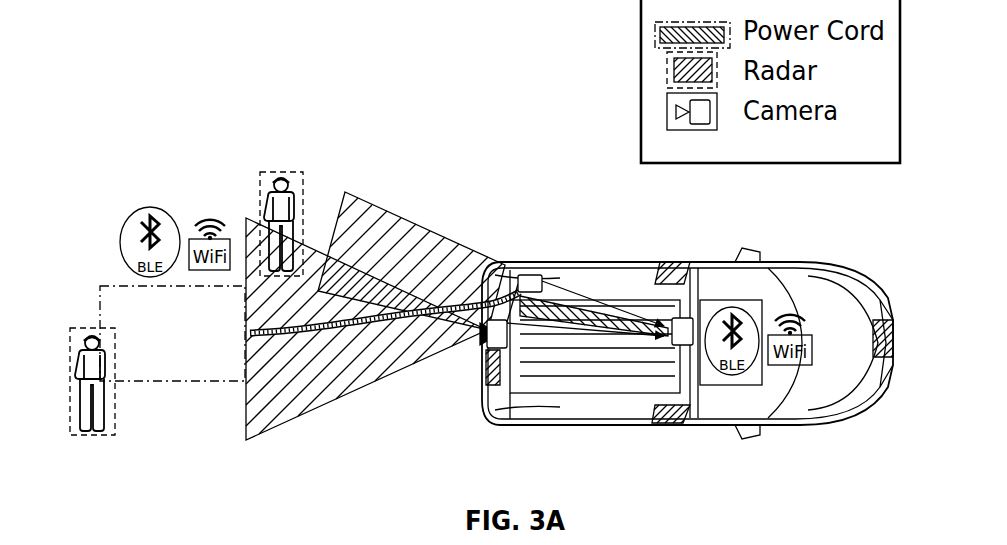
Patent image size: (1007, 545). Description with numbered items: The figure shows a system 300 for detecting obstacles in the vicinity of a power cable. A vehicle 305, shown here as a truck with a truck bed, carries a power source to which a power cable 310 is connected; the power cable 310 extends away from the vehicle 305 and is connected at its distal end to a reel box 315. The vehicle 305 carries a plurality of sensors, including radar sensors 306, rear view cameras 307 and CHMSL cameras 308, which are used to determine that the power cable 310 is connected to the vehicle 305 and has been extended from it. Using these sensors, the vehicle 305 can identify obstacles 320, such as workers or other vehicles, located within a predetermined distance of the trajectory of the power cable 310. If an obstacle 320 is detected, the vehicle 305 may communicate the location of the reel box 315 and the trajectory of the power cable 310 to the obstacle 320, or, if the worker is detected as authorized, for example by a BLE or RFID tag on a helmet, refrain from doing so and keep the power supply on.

The system 300 is at (200, 137).
The vehicle 305 is at (578, 262).
The radar sensors 306 is at (485, 383).
The rear view cameras 307 is at (497, 318).
The CHMSL cameras 308 is at (683, 317).
The power cable 310 is at (453, 303).
The reel box 315 is at (122, 286).
The obstacles 320 is at (297, 171).